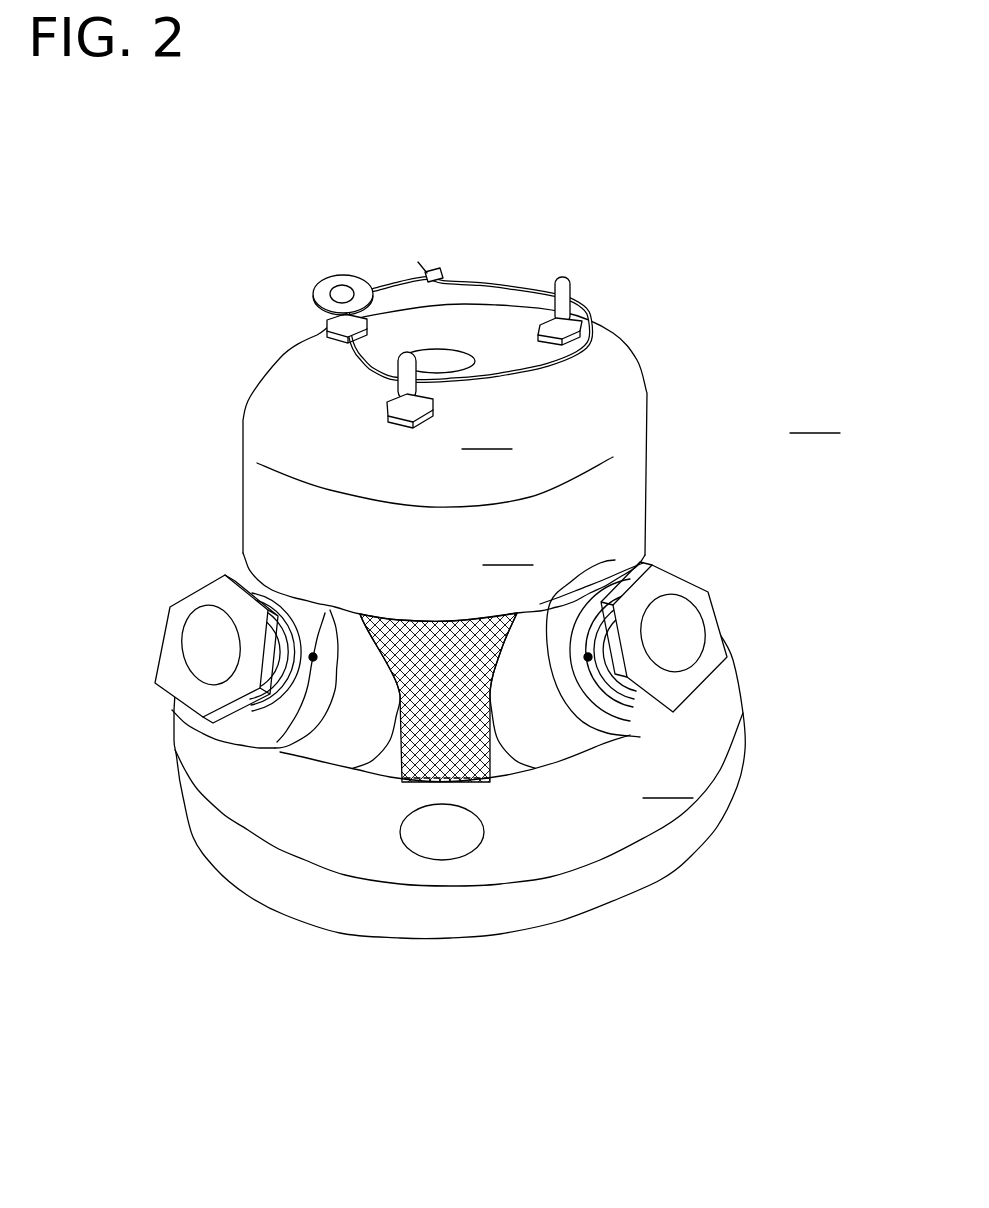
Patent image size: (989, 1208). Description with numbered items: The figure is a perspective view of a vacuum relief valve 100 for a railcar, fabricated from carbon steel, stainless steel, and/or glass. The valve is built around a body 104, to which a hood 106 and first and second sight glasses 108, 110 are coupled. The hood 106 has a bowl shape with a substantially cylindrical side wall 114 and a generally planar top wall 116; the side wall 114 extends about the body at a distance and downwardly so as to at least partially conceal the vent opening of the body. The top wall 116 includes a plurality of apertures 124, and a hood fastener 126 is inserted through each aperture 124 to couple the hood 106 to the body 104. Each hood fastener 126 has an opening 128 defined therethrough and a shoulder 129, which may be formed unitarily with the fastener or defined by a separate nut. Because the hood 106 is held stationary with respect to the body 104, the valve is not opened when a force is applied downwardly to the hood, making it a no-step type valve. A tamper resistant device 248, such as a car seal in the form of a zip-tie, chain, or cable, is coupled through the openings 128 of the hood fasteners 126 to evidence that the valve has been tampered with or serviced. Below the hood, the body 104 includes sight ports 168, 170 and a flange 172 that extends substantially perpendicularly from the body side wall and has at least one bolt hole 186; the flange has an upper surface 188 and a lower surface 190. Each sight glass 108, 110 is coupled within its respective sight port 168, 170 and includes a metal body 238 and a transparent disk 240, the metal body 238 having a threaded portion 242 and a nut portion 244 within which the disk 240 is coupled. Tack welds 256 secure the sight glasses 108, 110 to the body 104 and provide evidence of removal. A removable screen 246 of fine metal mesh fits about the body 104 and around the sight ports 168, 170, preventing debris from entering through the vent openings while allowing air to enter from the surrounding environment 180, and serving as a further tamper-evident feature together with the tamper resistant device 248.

The vacuum relief valve 100 is at (718, 220).
The body 104 is at (741, 622).
The hood 106 is at (449, 413).
The first sight glass 108 is at (200, 602).
The second sight glass 110 is at (690, 582).
The side wall 114 is at (444, 577).
The top wall 116 is at (435, 428).
The aperture 124 is at (332, 334).
The hood fastener 126 is at (319, 260).
The opening 128 is at (345, 292).
The shoulder 129 is at (393, 410).
The first sight port 168 is at (350, 747).
The second sight port 170 is at (557, 745).
The flange 172 is at (647, 817).
The surrounding environment 180 is at (814, 418).
The bolt hole 186 is at (440, 842).
The upper surface 188 is at (667, 783).
The lower surface 190 is at (673, 877).
The metal body 238 is at (262, 727).
The transparent disk 240 is at (203, 643).
The threaded portion 242 is at (280, 752).
The nut portion 244 is at (202, 707).
The screen 246 is at (474, 763).
The tamper resistant device 248 is at (477, 283).
The tack weld 256 is at (313, 657).